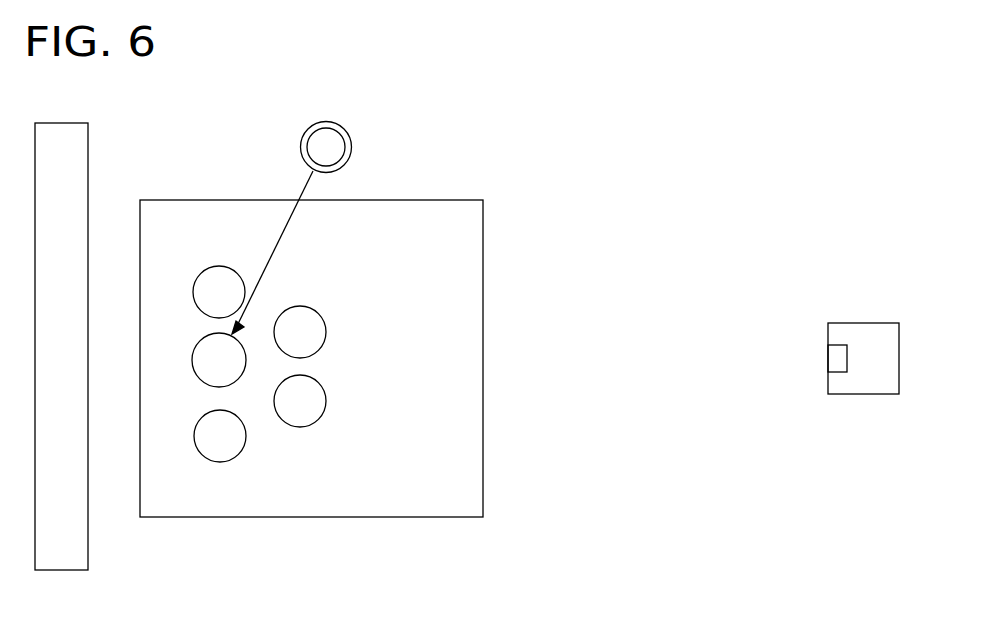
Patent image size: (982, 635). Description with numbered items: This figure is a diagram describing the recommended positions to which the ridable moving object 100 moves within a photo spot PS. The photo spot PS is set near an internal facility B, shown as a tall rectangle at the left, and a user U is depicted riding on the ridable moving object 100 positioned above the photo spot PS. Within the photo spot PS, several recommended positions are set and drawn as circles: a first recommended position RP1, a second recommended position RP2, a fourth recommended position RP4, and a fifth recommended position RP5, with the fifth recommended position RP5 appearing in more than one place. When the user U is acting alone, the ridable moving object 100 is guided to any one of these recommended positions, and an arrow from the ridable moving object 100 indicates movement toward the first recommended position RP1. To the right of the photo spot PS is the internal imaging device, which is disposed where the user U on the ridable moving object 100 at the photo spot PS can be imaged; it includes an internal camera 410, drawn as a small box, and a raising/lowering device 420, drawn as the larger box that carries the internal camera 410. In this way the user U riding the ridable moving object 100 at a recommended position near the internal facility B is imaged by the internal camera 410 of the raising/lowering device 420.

The internal facility B is at (77, 155).
The user U is at (318, 147).
The ridable moving object 100 is at (352, 147).
The photo spot PS is at (475, 428).
The first recommended position RP1 is at (195, 372).
The second recommended position RP2 is at (218, 266).
The fourth recommended position RP4 is at (326, 332).
The fifth recommended position RP5 is at (326, 400).
The internal camera 410 is at (838, 358).
The raising/lowering device 420 is at (864, 386).